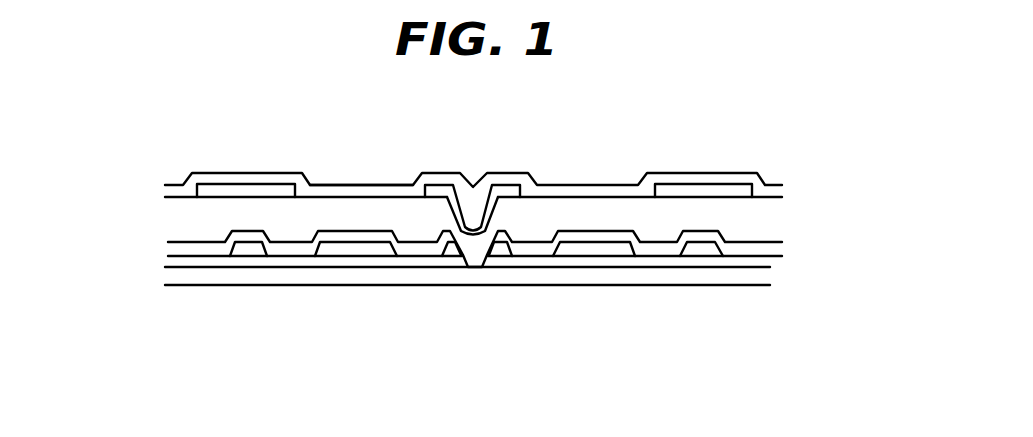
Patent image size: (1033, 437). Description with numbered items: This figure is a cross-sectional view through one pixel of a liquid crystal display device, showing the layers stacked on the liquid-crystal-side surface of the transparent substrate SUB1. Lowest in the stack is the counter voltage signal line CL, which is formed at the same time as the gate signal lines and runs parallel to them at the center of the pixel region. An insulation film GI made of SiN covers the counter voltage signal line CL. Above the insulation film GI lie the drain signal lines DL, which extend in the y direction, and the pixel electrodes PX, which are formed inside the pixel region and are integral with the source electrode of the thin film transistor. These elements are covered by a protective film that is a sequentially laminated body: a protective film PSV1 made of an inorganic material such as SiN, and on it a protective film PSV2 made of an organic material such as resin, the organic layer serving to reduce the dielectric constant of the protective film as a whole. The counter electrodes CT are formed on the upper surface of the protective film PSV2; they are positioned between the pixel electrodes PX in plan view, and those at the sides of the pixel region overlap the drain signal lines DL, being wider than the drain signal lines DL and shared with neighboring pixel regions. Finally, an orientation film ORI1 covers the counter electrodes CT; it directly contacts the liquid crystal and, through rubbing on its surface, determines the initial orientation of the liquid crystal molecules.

The counter electrode CT is at (247, 193).
The pixel electrode PX is at (347, 250).
The orientation film ORI1 is at (387, 185).
The protective film PSV2 is at (187, 219).
The protective film PSV1 is at (187, 252).
The drain signal line DL is at (712, 247).
The insulation film GI is at (762, 259).
The counter voltage signal line CL is at (762, 277).
The transparent substrate SUB1 is at (745, 352).